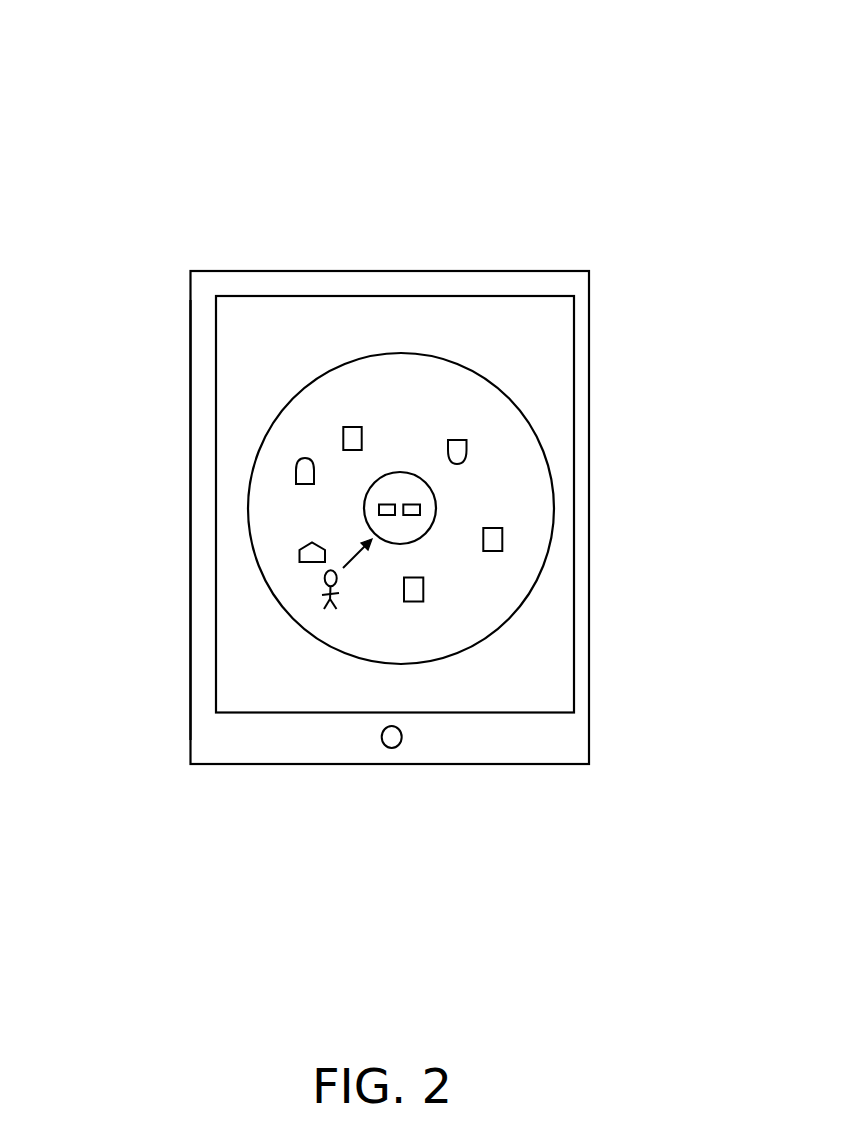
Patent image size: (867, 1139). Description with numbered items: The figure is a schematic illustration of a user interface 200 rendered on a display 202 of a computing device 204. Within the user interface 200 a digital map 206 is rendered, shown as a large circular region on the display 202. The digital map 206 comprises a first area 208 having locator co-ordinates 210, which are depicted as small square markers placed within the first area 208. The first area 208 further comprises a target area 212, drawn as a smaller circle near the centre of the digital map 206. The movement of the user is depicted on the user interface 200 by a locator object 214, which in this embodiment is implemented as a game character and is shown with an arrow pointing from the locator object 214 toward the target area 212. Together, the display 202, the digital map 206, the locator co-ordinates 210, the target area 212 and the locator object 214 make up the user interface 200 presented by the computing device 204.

The user interface 200 is at (597, 54).
The display 202 is at (248, 295).
The computing device 204 is at (190, 358).
The digital map 206 is at (367, 307).
The first area 208 is at (498, 416).
The locator co-ordinates 210 is at (430, 586).
The target area 212 is at (434, 490).
The locator object 214 is at (324, 579).